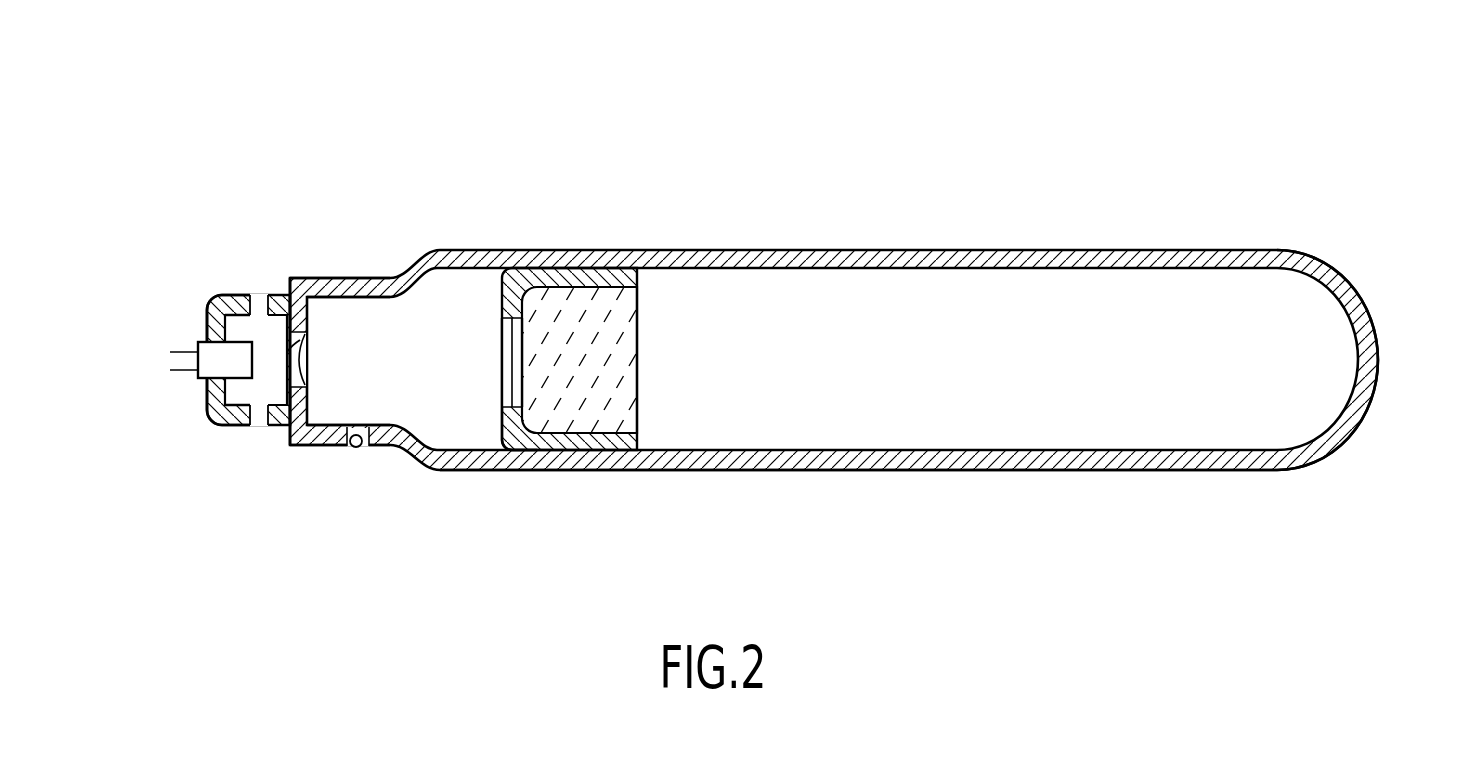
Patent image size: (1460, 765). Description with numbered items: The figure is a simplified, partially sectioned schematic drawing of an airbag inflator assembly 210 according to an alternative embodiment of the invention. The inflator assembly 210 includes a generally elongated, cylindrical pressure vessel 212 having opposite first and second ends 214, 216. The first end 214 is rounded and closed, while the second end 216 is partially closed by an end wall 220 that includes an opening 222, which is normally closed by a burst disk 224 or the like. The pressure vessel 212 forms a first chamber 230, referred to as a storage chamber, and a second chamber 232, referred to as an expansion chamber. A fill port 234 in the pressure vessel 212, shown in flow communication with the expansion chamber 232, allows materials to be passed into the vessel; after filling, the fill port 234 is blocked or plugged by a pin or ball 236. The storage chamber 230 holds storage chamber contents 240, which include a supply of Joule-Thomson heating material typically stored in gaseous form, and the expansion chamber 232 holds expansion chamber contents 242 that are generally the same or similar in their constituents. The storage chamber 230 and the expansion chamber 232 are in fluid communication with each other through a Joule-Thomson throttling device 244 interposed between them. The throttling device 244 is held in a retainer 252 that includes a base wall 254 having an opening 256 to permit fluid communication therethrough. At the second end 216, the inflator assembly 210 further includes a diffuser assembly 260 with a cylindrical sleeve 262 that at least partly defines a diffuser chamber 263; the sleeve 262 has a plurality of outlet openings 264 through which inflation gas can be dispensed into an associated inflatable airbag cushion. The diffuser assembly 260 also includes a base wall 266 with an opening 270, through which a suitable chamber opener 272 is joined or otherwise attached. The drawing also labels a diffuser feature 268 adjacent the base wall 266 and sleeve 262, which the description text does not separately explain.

The inflator assembly 210 is at (902, 145).
The pressure vessel 212 is at (768, 246).
The first end 214 is at (1366, 273).
The second end 216 is at (296, 227).
The end wall 220 is at (282, 427).
The opening 222 is at (290, 297).
The burst disk 224 is at (293, 357).
The first chamber 230 is at (772, 472).
The second chamber 232 is at (365, 443).
The fill port 234 is at (333, 445).
The pin or ball 236 is at (350, 448).
The storage chamber contents 240 is at (992, 425).
The expansion chamber contents 242 is at (385, 317).
The Joule-Thomson throttling device 244 is at (549, 415).
The retainer 252 is at (602, 443).
The base wall 254 is at (525, 430).
The opening 256 is at (533, 340).
The diffuser assembly 260 is at (186, 293).
The cylindrical sleeve 262 is at (220, 423).
The diffuser chamber 263 is at (227, 320).
The outlet openings 264 is at (257, 302).
The base wall 266 is at (222, 400).
The cap upper side wall 268 is at (255, 328).
The opening 270 is at (203, 390).
The chamber opener 272 is at (213, 360).